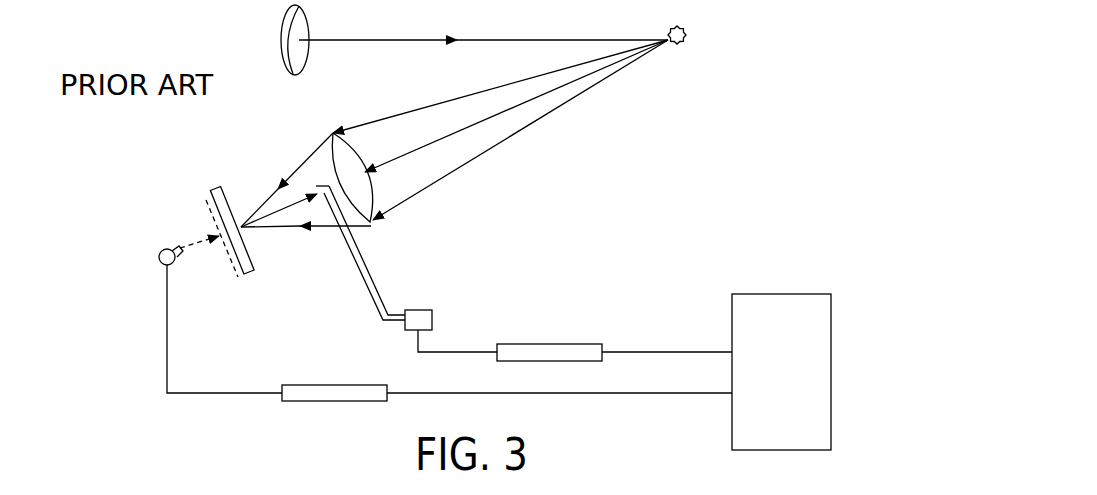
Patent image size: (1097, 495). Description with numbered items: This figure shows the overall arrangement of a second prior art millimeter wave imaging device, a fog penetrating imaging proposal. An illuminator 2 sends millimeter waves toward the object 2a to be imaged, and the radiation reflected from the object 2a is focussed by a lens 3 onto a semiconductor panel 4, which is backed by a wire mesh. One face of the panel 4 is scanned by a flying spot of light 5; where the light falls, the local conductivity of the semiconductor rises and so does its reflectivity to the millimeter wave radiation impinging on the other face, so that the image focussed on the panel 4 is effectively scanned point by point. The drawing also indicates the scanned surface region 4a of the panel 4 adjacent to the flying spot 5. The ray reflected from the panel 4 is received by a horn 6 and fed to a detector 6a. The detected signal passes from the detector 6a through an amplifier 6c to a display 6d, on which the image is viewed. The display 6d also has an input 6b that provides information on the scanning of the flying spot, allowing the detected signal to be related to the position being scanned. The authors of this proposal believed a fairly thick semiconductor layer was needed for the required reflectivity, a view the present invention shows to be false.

The illuminator 2 is at (282, 33).
The object 2a is at (686, 35).
The lens 3 is at (373, 204).
The semiconductor panel 4 is at (220, 186).
The mirror reflecting surface 4a is at (206, 200).
The flying spot of light 5 is at (159, 256).
The horn 6 is at (320, 185).
The detector 6a is at (418, 310).
The input 6b is at (335, 385).
The amplifier 6c is at (548, 344).
The display 6d is at (781, 294).